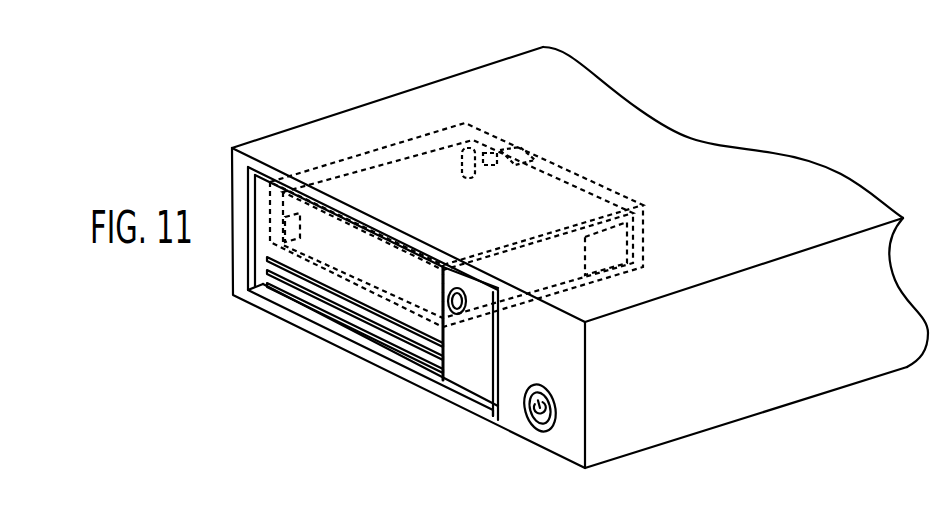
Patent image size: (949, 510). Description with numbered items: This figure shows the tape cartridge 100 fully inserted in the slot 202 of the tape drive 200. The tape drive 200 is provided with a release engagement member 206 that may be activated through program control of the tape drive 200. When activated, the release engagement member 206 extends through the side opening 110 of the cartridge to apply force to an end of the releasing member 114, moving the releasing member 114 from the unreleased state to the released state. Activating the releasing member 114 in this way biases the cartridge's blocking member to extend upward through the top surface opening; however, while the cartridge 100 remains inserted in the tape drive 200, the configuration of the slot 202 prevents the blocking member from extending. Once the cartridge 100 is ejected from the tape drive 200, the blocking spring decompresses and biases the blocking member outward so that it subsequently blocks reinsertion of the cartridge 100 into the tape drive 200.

The tape drive 200 is at (347, 113).
The tape cartridge 100 is at (405, 178).
The slot 202 is at (625, 202).
The releasing member 114 is at (497, 153).
The side opening 110 is at (508, 150).
The release engagement member 206 is at (520, 156).